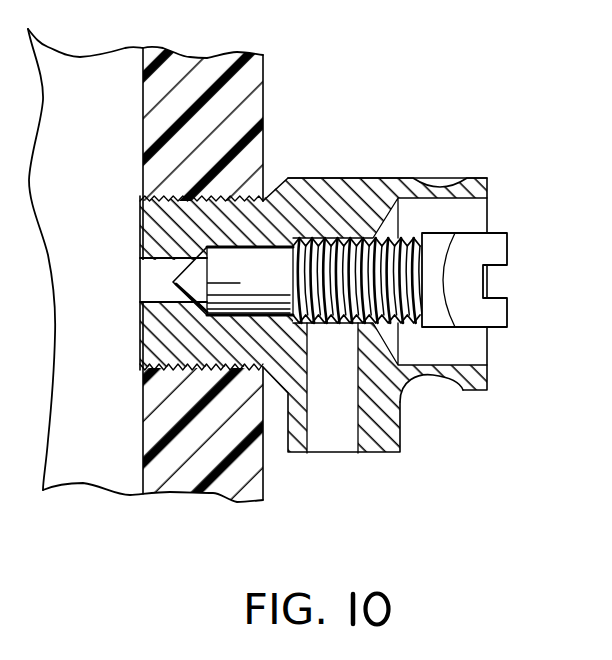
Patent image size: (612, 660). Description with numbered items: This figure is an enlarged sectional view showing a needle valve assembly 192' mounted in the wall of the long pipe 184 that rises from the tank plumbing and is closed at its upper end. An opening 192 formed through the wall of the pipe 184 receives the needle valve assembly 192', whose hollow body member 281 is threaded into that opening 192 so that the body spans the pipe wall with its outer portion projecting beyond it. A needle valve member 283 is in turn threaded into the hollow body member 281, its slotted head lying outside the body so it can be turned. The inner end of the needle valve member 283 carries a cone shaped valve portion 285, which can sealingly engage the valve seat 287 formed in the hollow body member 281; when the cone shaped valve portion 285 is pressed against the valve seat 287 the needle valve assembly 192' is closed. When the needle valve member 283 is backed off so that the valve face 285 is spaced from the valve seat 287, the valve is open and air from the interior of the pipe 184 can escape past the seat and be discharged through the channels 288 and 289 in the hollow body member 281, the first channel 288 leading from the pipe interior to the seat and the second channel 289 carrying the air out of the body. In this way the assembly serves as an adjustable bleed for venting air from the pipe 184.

The pipe 184 is at (183, 473).
The opening 192 is at (275, 315).
The needle valve assembly 192' is at (463, 416).
The hollow body member 281 is at (388, 185).
The needle valve member 283 is at (511, 243).
The cone shaped valve portion 285 is at (192, 262).
The valve seat 287 is at (175, 283).
The channel 288 is at (153, 258).
The channel 289 is at (358, 425).